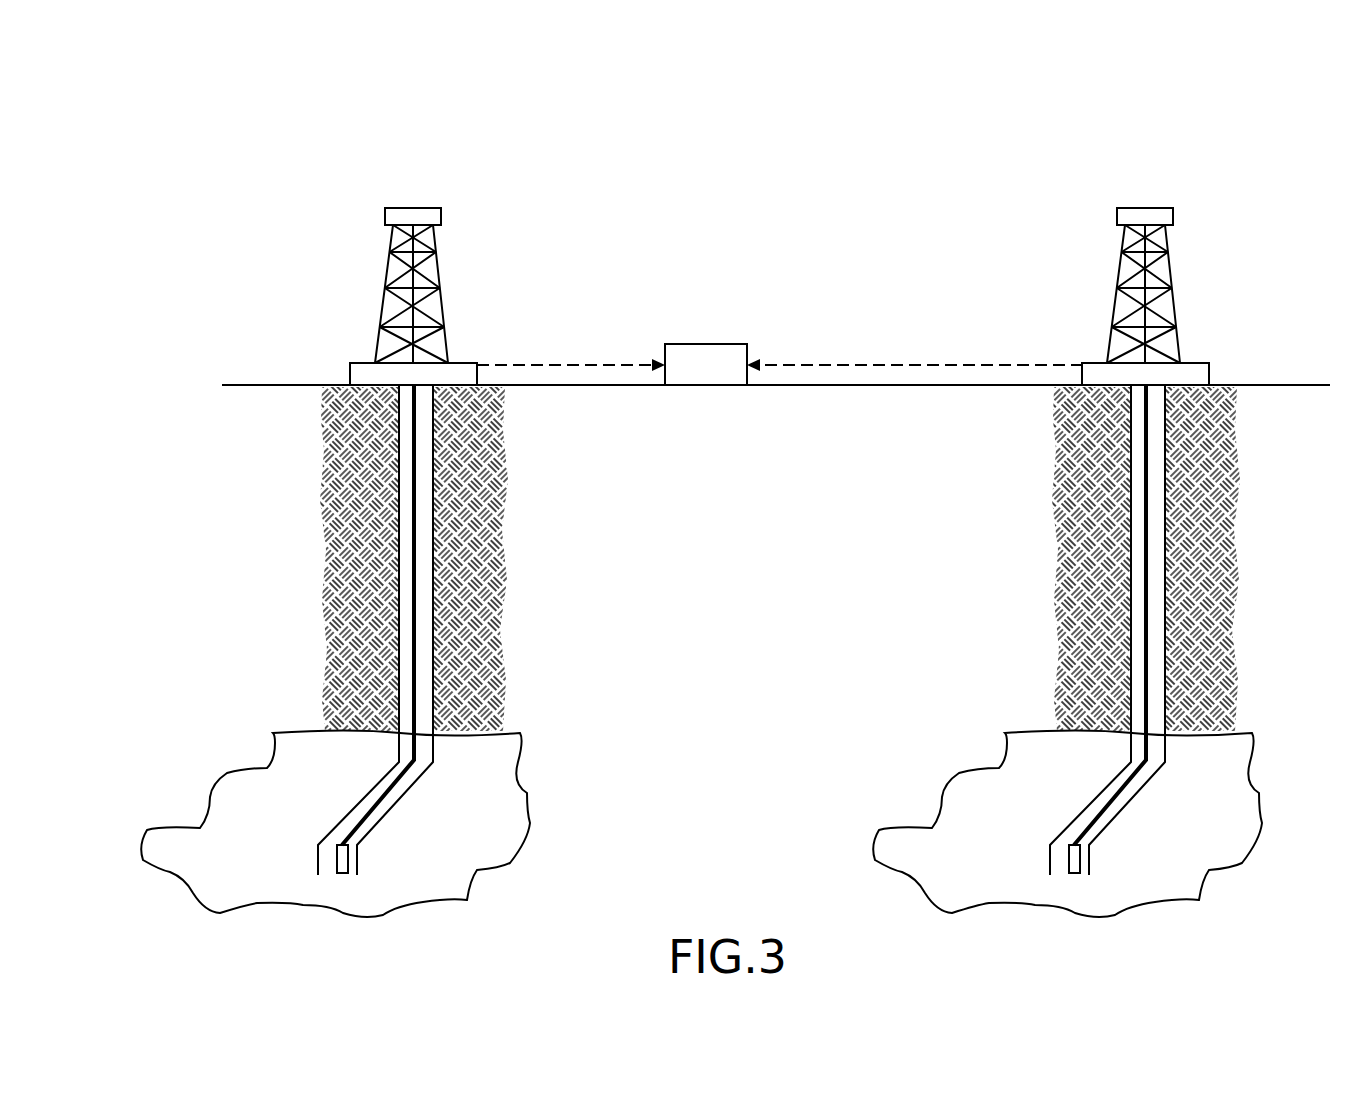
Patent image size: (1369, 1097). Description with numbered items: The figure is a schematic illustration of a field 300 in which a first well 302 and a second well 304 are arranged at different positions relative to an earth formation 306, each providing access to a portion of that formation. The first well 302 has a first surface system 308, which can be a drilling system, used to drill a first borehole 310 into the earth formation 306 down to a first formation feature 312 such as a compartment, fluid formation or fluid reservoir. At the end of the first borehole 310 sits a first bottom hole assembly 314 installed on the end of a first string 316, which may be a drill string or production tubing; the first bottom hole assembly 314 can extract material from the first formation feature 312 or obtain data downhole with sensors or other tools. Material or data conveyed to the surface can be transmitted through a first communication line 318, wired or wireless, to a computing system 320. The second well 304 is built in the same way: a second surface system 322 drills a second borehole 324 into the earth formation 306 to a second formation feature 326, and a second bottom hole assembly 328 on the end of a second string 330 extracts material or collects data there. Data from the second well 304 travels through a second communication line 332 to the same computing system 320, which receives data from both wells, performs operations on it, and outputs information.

The field 300 is at (1153, 138).
The first well 302 is at (359, 296).
The second well 304 is at (1092, 296).
The earth formation 306 is at (497, 573).
The first surface system 308 is at (368, 330).
The first borehole 310 is at (399, 515).
The first formation feature 312 is at (503, 767).
The first bottom hole assembly 314 is at (344, 873).
The first string 316 is at (414, 637).
The first communication line 318 is at (545, 365).
The computing system 320 is at (703, 365).
The second surface system 322 is at (1101, 330).
The second borehole 324 is at (1131, 515).
The second formation feature 326 is at (1235, 767).
The second bottom hole assembly 328 is at (1076, 873).
The second string 330 is at (1146, 637).
The second communication line 332 is at (868, 365).